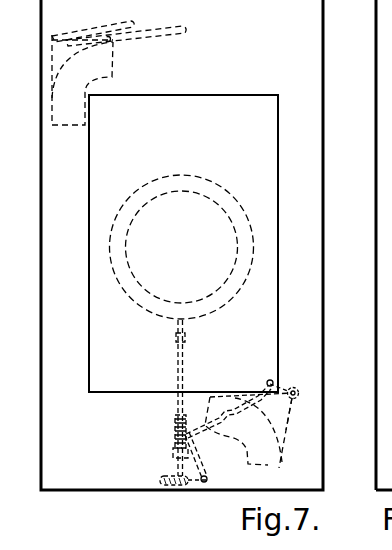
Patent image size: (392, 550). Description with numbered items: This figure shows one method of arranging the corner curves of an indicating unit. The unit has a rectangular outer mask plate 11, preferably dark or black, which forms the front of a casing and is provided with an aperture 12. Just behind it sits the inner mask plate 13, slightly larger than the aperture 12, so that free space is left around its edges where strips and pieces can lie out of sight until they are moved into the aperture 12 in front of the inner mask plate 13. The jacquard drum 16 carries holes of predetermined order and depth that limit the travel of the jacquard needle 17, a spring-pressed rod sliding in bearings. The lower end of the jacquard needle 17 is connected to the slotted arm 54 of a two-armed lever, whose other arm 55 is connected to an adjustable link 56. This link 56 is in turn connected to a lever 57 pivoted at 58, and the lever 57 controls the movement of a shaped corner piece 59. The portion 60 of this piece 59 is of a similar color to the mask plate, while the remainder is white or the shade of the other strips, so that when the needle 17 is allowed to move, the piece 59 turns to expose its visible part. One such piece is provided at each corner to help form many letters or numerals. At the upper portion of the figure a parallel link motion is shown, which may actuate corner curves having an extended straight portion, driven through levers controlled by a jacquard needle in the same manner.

The outer mask plate 11 is at (314, 224).
The aperture 12 is at (88, 370).
The inner mask plate 13 is at (90, 213).
The jacquard drum 16 is at (229, 196).
The jacquard needle 17 is at (178, 372).
The slotted arm 54 is at (162, 479).
The arm 55 is at (200, 466).
The adjustable link 56 is at (267, 383).
The lever 57 is at (284, 388).
The pivot 58 is at (299, 392).
The corner piece 59 is at (276, 472).
The portion of the piece 60 is at (291, 429).